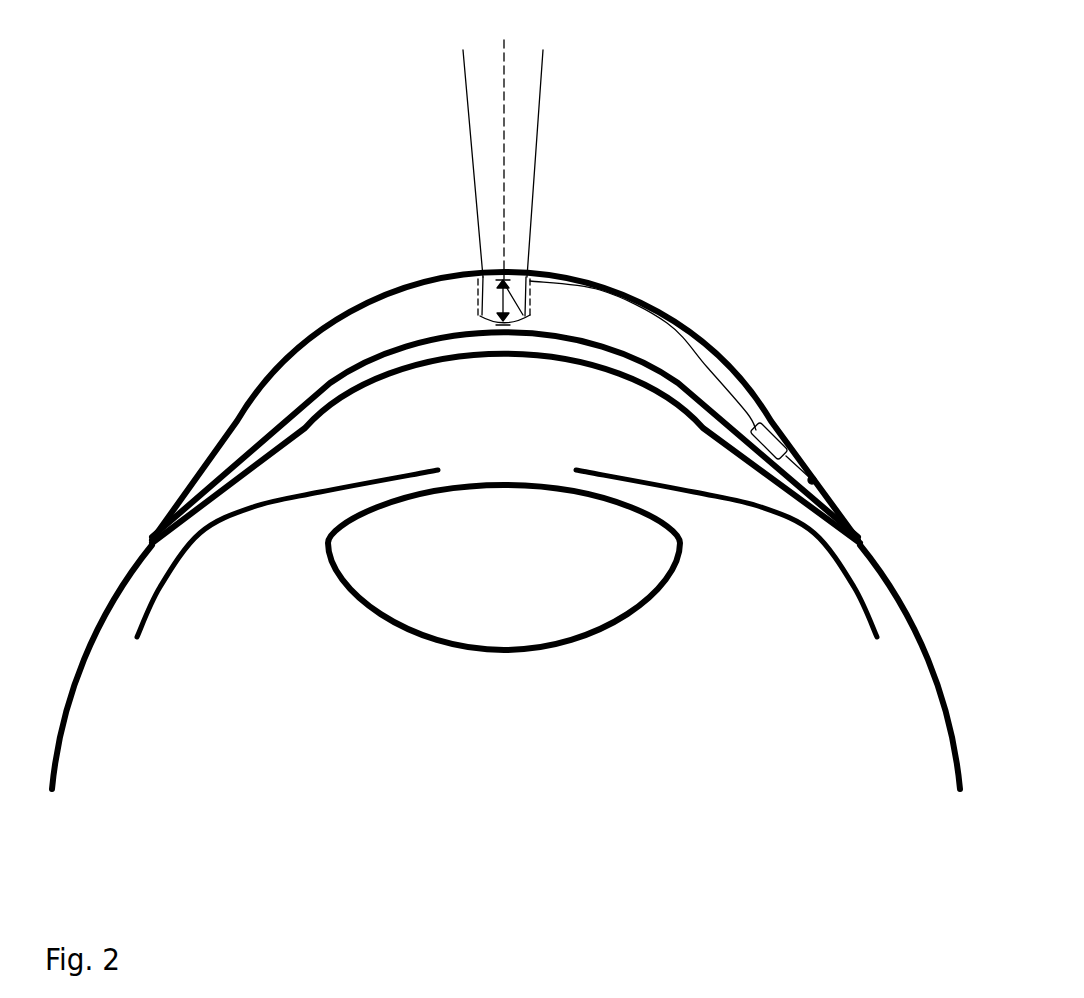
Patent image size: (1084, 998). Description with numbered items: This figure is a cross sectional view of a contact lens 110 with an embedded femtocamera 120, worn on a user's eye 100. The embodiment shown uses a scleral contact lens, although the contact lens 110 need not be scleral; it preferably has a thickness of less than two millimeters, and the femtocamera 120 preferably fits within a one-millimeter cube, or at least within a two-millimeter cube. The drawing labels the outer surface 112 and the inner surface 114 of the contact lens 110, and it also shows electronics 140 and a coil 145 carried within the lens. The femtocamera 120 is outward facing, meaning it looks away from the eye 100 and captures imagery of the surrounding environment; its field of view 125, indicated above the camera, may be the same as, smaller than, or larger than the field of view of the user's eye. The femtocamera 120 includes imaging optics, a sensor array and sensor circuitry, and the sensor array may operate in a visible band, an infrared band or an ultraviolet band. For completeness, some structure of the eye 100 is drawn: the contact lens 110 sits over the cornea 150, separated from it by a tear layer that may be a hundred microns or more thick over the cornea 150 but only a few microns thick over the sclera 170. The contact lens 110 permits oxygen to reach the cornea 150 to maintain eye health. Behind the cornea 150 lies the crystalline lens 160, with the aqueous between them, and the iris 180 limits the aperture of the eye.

The eye 100 is at (765, 722).
The contact lens 110 is at (502, 277).
The outer surface 112 is at (297, 343).
The inner surface 114 is at (313, 397).
The femtocamera 120 is at (522, 282).
The field of view 125 is at (502, 146).
The electronics 140 is at (763, 433).
The coil 145 is at (812, 477).
The cornea 150 is at (553, 397).
The crystalline lens 160 is at (537, 576).
The sclera 170 is at (506, 633).
The iris 180 is at (668, 468).